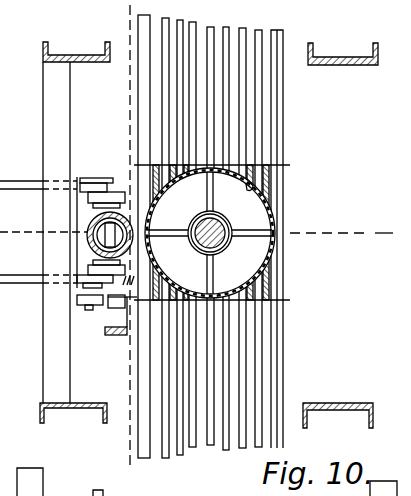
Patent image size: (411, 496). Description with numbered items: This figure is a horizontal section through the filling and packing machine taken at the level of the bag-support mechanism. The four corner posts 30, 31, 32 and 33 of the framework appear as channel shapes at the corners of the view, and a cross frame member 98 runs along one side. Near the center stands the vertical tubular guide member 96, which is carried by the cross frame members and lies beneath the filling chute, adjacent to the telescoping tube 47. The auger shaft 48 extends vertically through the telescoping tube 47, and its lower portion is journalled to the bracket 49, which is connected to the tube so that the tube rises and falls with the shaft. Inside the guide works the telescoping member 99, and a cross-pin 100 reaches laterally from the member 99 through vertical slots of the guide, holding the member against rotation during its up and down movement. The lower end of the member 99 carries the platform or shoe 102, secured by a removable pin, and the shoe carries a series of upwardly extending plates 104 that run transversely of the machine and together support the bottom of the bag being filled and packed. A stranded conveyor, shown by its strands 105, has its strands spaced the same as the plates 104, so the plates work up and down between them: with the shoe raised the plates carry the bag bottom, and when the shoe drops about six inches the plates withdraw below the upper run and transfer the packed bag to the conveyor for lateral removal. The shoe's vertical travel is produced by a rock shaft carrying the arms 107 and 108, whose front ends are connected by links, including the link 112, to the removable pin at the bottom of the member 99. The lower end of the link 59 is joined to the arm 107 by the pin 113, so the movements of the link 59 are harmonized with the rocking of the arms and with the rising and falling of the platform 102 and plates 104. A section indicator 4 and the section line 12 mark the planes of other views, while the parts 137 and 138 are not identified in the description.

The section line 4- 4 is at (383, 206).
The section line 12- 12 is at (130, 7).
The corner post 30 is at (332, 411).
The corner post 31 is at (335, 60).
The corner post 32 is at (82, 55).
The corner post 33 is at (76, 409).
The telescoping tube 47 is at (252, 186).
The auger shaft 48 is at (230, 222).
The bracket 49 is at (256, 277).
The link 59 is at (108, 335).
The vertical tubular guide member 96 is at (88, 240).
The cross frame member 98 is at (43, 343).
The telescoping member 99 is at (88, 227).
The cross-pin 100 is at (93, 246).
The platform or shoe 102 is at (127, 165).
The plates 104 is at (265, 292).
The strands 105 is at (227, 362).
The arm 107 is at (32, 284).
The arm 108 is at (20, 181).
The link 112 is at (116, 196).
The pin 113 is at (88, 310).
The end fin 137 is at (281, 117).
The first fin 138 is at (139, 95).